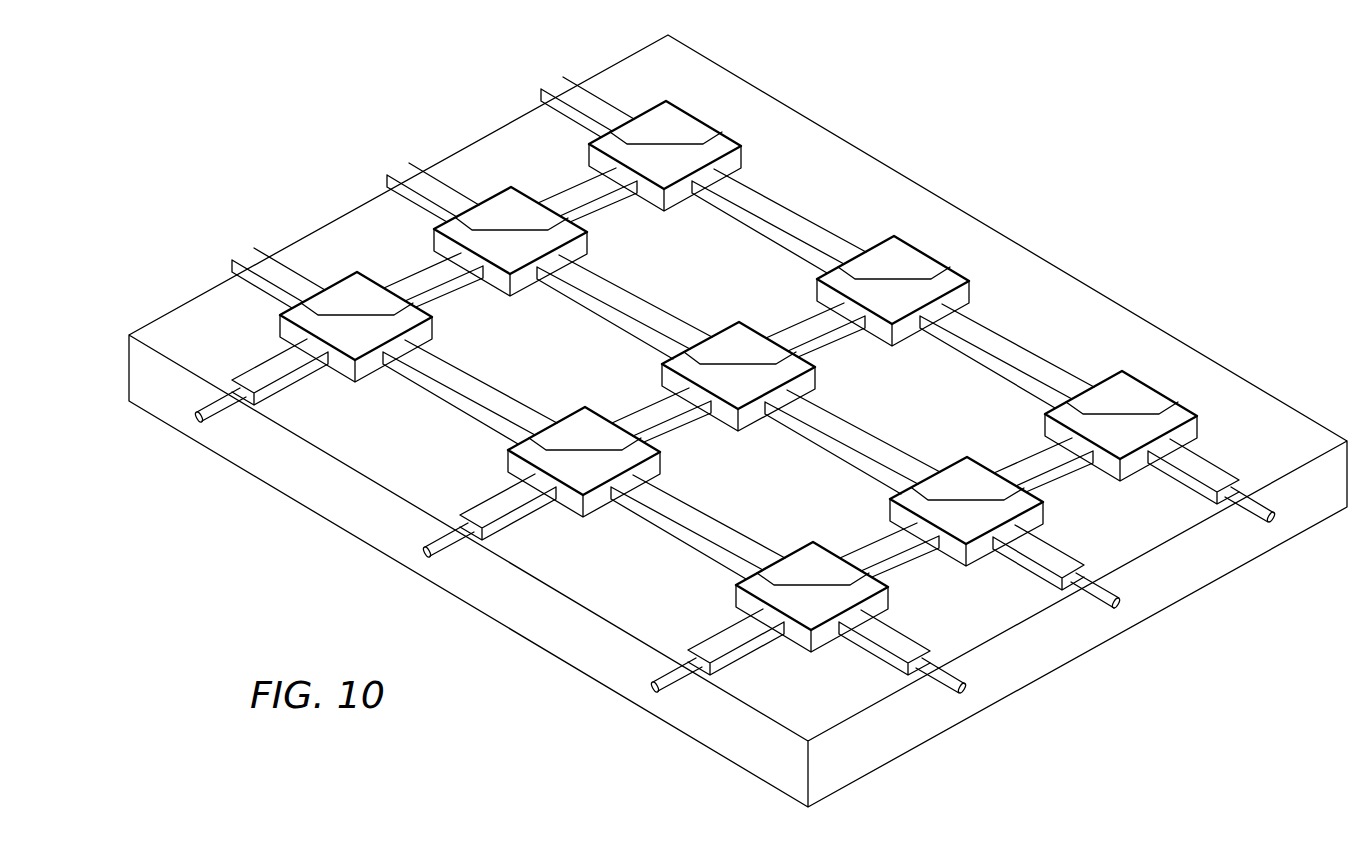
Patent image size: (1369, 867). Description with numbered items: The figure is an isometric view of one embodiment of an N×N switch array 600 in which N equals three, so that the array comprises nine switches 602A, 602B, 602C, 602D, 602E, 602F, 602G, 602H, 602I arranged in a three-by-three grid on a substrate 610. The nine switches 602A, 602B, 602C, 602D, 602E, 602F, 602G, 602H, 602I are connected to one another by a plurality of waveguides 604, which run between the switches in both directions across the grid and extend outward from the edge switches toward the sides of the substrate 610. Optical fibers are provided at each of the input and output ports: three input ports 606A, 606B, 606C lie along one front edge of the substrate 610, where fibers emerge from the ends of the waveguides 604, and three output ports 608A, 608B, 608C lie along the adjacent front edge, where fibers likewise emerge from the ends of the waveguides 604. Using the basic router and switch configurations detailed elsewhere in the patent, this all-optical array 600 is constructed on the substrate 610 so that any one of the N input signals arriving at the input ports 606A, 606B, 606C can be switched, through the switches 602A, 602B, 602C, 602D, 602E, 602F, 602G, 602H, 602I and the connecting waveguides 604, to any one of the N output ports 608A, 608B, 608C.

The N×N switch array 600 is at (1088, 118).
The switch 602A is at (353, 275).
The switch 602B is at (508, 190).
The switch 602C is at (660, 104).
The switch 602D is at (582, 413).
The switch 602E is at (737, 327).
The switch 602F is at (891, 241).
The switch 602G is at (811, 547).
The switch 602H is at (965, 462).
The switch 602I is at (1118, 376).
The waveguides 604 is at (547, 97).
The input port 606A is at (199, 418).
The input port 606B is at (427, 554).
The input port 606C is at (655, 690).
The output port 608A is at (964, 692).
The output port 608B is at (1118, 606).
The output port 608C is at (1273, 520).
The substrate 610 is at (1012, 237).